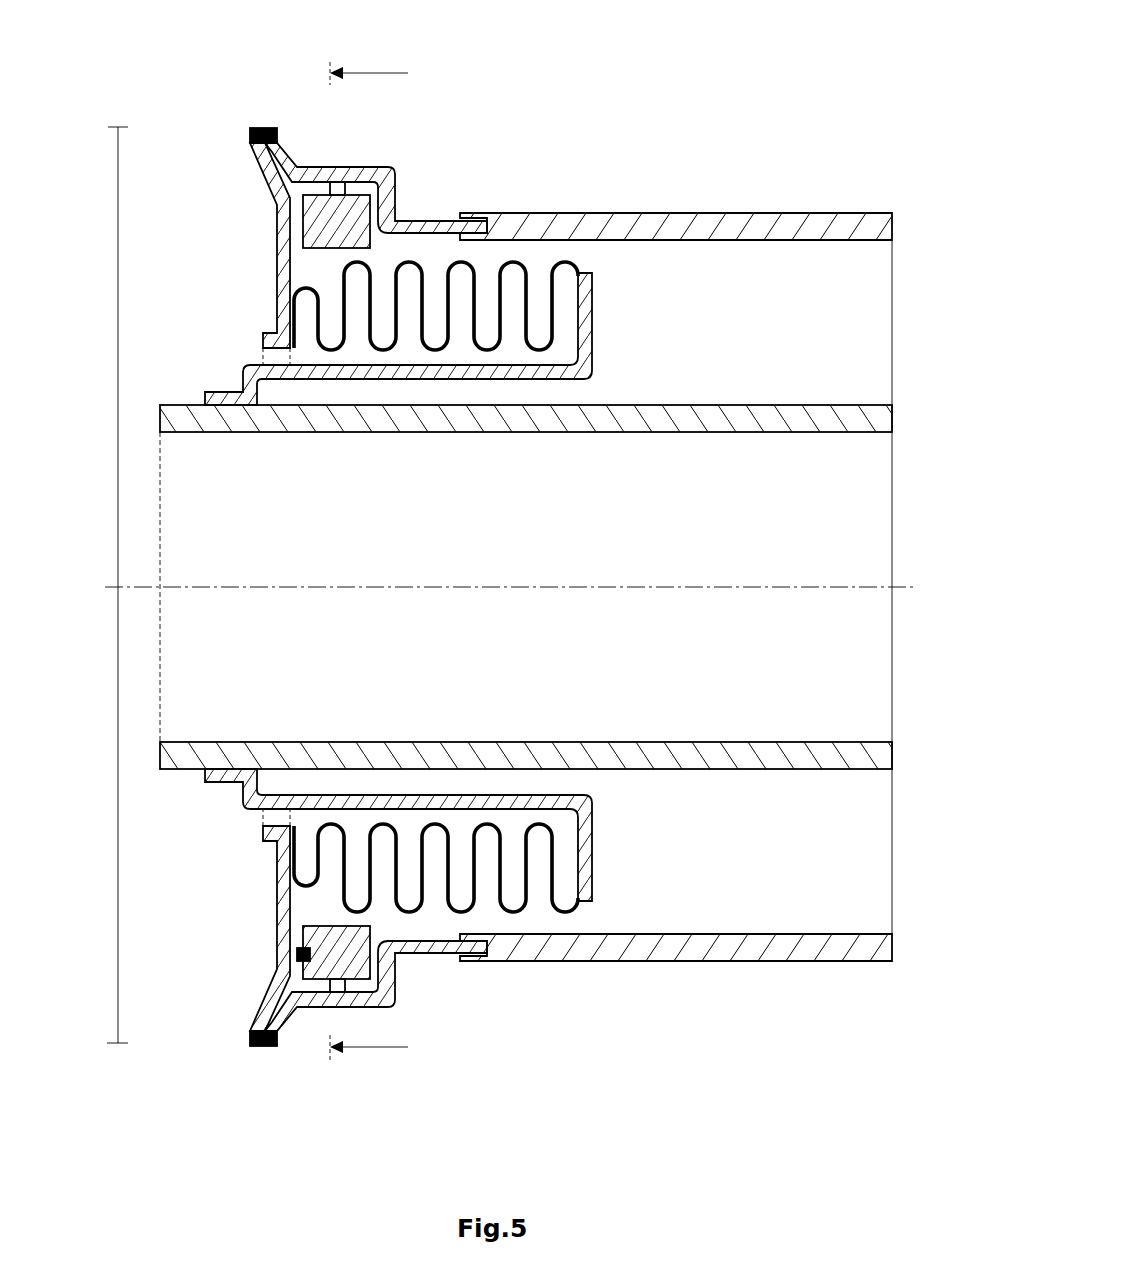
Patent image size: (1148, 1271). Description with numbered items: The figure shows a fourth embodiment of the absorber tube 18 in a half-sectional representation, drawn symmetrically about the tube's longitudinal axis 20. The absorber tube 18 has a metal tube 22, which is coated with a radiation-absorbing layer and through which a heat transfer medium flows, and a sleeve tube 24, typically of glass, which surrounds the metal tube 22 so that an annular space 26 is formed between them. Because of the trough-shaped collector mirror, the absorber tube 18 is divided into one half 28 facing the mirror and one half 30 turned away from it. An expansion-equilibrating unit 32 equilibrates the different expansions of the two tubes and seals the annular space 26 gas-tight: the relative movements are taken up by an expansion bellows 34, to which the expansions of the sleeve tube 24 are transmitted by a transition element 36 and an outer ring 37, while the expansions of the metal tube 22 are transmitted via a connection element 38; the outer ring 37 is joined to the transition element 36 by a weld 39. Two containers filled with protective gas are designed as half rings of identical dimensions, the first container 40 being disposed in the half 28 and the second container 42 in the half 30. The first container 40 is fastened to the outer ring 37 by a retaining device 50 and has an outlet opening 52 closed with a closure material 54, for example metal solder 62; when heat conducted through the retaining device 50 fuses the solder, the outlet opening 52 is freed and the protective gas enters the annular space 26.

The absorber tube 18 is at (767, 107).
The longitudinal axis 20 is at (292, 585).
The metal tube 22 is at (725, 405).
The sleeve tube 24 is at (630, 213).
The annular space 26 is at (785, 309).
The half facing collector mirror 28 is at (107, 815).
The half turned away from collector mirror 30 is at (107, 357).
The expansion-equilibrating unit 32 is at (226, 98).
The expansion bellows 34 is at (528, 245).
The transition element 36 is at (386, 165).
The outer ring 37 is at (262, 336).
The connection element 38 is at (590, 340).
The weld 39 is at (280, 1048).
The first container 40 is at (312, 928).
The second container 42 is at (303, 238).
The retaining device 50 is at (334, 180).
The outlet opening 52 is at (220, 949).
The closure material 54 is at (220, 949).
The metal solder 62 is at (297, 955).